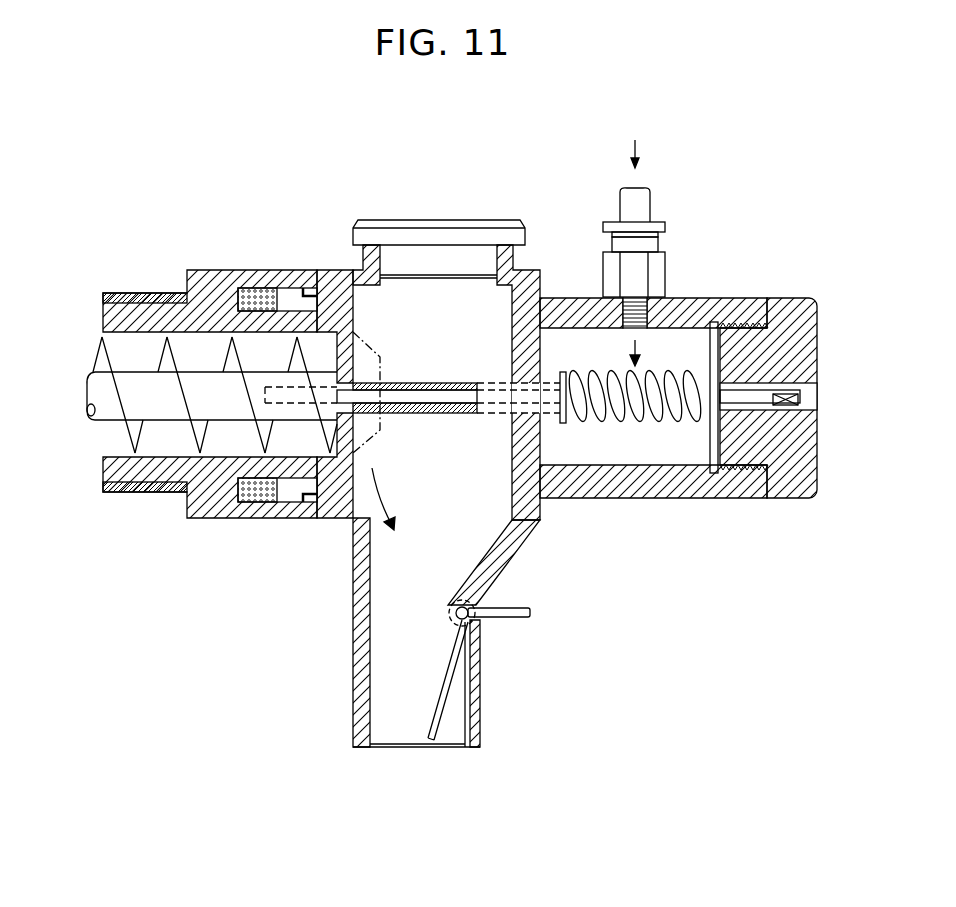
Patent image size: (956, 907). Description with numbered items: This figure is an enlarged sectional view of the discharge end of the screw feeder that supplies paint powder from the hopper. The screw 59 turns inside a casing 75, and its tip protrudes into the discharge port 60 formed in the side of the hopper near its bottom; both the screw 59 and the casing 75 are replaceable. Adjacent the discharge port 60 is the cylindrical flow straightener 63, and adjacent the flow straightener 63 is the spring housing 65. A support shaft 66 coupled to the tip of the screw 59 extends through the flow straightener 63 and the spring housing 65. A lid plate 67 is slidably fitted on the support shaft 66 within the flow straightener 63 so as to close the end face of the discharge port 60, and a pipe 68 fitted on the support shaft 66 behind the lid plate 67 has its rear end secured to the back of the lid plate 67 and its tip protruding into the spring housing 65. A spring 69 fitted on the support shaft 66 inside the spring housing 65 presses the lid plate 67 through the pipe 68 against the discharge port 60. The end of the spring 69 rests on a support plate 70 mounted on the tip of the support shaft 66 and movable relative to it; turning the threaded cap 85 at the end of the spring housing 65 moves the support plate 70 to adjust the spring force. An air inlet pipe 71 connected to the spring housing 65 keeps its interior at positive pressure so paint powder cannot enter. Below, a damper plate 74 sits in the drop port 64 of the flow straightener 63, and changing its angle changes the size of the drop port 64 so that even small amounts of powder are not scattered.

The screw 59 is at (100, 357).
The discharge port 60 is at (278, 290).
The flow straightener 63 is at (387, 214).
The drop port 64 is at (393, 718).
The spring housing 65 is at (655, 480).
The support shaft 66 is at (406, 397).
The lid plate 67 is at (327, 277).
The pipe 68 is at (448, 387).
The spring 69 is at (683, 378).
The support plate 70 is at (772, 410).
The air inlet pipe 71 is at (640, 203).
The damper plate 74 is at (440, 720).
The casing 75 is at (214, 270).
The threaded cap 85 is at (797, 353).